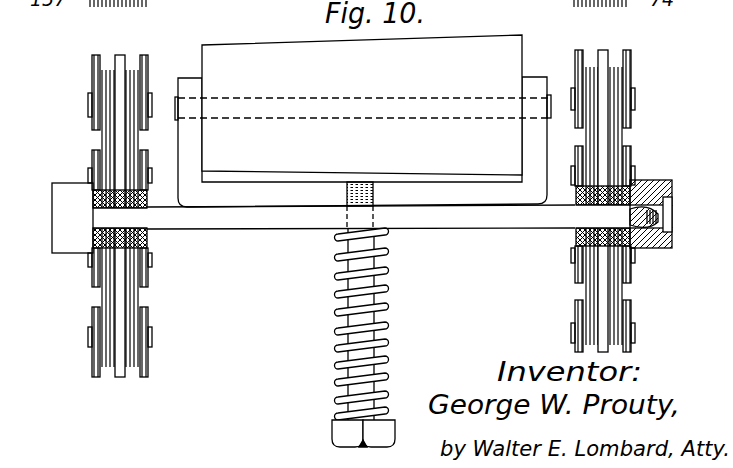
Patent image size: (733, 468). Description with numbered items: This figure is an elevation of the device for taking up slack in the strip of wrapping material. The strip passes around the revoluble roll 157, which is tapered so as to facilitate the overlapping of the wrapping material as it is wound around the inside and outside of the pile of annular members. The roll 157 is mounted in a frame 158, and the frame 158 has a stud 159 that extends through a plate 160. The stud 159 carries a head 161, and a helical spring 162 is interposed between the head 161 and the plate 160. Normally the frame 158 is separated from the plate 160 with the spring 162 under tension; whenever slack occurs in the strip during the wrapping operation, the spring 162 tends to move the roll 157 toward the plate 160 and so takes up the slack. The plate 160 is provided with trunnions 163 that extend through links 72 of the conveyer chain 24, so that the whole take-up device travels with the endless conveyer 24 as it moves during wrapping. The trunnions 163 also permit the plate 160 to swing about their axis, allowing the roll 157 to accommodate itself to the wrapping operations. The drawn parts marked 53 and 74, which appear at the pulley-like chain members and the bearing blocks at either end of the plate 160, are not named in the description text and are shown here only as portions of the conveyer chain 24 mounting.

The conveyer chain 24 is at (110, 78).
The pulley flange 53 is at (125, 70).
The links 72 is at (133, 219).
The bearing bracket 74 is at (66, 253).
The revoluble roll 157 is at (252, 55).
The frame 158 is at (240, 200).
The stud 159 is at (368, 283).
The plate 160 is at (298, 222).
The head 161 is at (340, 433).
The helical spring 162 is at (386, 338).
The trunnions 163 is at (120, 192).